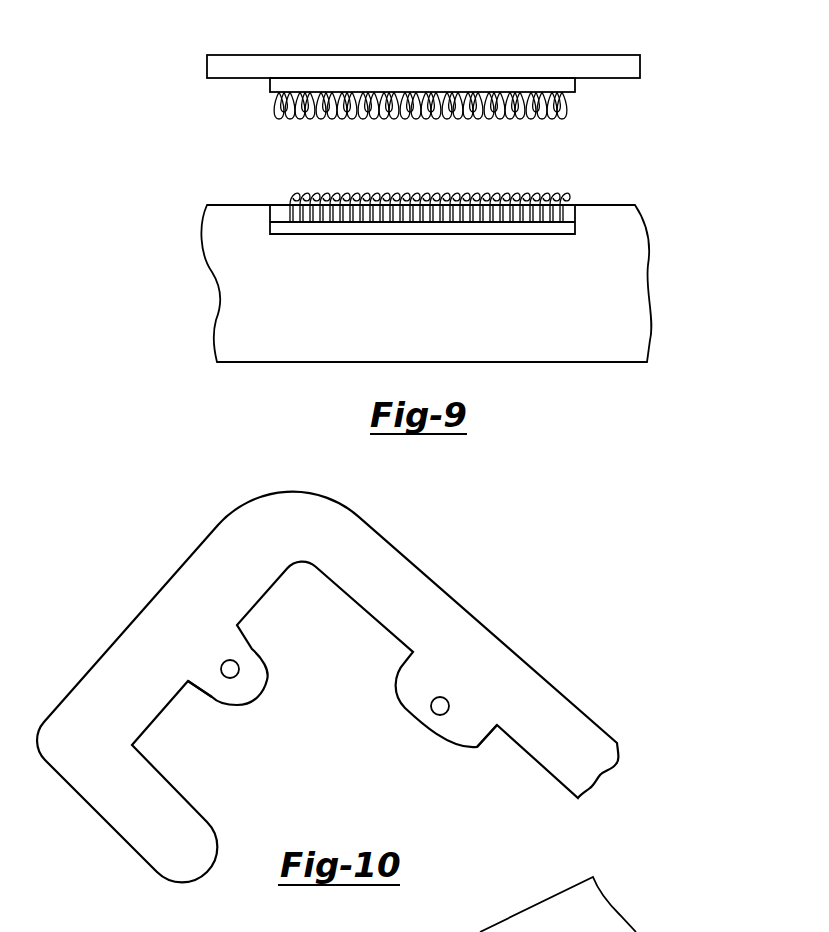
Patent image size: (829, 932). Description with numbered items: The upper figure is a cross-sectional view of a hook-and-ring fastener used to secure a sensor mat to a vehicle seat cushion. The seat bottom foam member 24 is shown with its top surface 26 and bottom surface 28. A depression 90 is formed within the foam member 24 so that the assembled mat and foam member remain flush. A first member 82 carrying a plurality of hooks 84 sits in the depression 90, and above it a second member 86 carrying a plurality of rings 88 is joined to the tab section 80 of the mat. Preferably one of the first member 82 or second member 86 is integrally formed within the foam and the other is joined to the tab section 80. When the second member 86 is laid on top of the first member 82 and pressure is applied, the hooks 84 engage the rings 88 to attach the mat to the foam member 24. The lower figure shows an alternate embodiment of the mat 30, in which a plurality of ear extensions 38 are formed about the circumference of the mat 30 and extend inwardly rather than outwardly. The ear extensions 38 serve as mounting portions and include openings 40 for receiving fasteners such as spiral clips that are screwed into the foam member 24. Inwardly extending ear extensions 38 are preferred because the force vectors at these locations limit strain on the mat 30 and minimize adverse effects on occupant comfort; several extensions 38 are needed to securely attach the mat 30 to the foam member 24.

In FIG. 9, the seat bottom foam member 24 is at (625, 330).
In FIG. 9, the top surface 26 is at (222, 204).
In FIG. 9, the bottom surface 28 is at (539, 364).
In FIG. 9, the tab section 80 is at (587, 68).
In FIG. 9, the first member 82 is at (294, 228).
In FIG. 9, the hooks 84 is at (567, 190).
In FIG. 9, the second member 86 is at (575, 83).
In FIG. 9, the rings 88 is at (275, 114).
In FIG. 9, the depression 90 is at (341, 236).
In FIG. 10, the mat 30 is at (150, 632).
In FIG. 10, the ear extensions 38 is at (215, 687).
In FIG. 10, the openings 40 is at (233, 670).